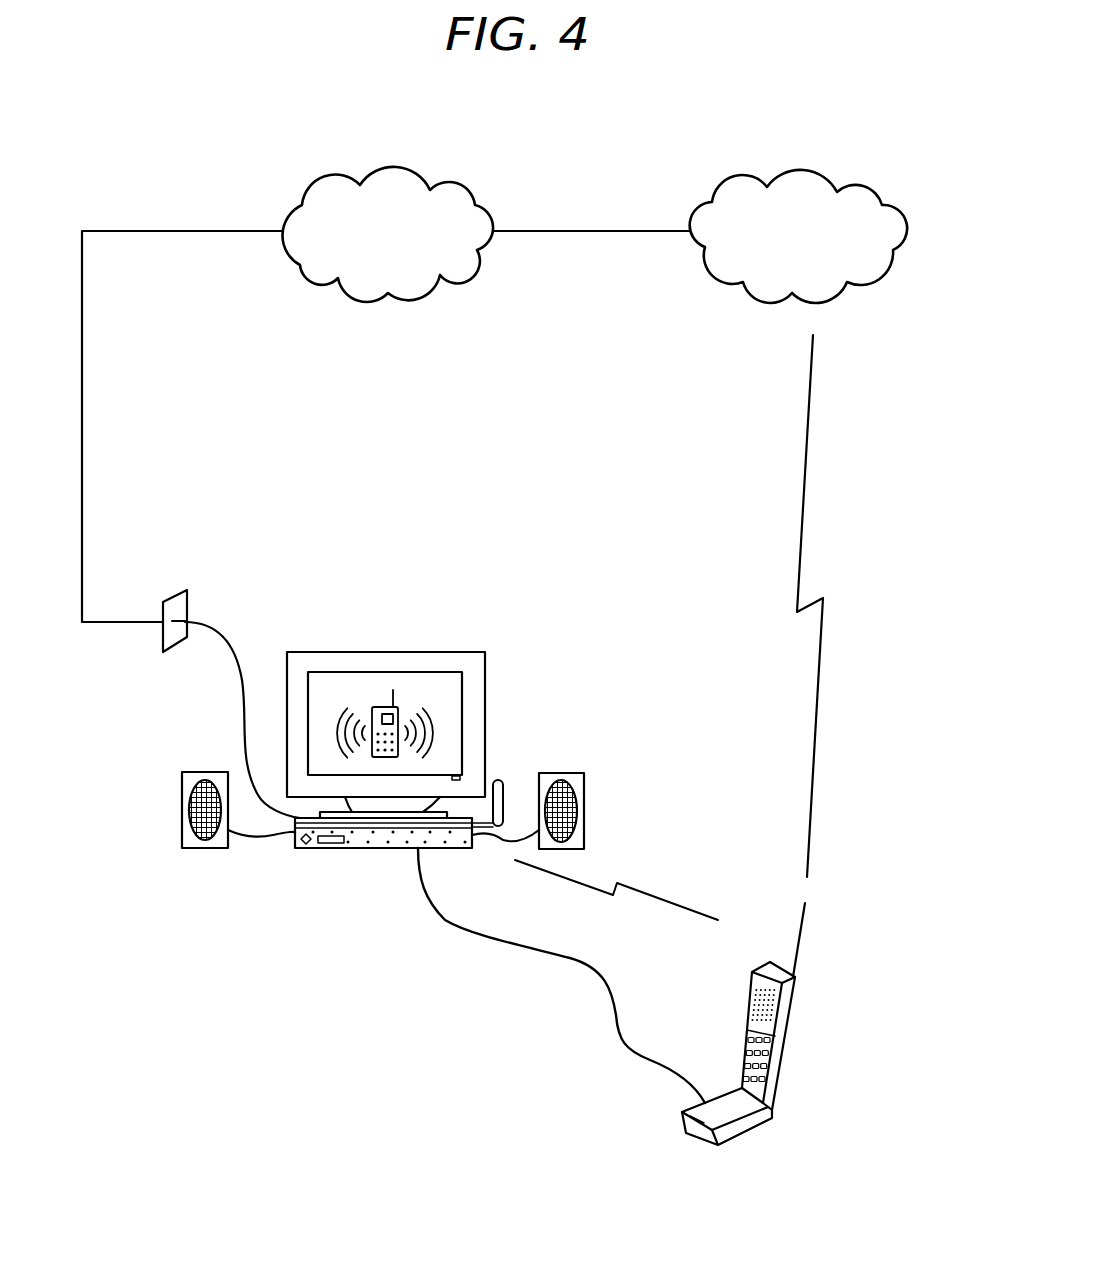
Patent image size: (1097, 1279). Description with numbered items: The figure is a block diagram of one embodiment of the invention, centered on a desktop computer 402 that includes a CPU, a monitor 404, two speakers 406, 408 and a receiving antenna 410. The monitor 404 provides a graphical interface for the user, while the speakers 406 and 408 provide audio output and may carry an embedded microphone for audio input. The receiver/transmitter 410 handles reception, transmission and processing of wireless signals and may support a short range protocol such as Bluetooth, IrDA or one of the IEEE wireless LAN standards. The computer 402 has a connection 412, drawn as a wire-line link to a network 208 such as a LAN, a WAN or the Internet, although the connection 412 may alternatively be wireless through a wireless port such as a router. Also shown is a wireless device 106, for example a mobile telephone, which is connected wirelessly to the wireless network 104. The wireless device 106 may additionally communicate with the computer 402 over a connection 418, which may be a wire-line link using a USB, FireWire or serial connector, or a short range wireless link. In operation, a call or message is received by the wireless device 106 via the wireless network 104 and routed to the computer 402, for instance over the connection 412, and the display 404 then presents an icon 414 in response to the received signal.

The wireless network 104 is at (880, 190).
The network 208 is at (303, 285).
The connection 412 is at (220, 638).
The monitor 404 is at (485, 690).
The icon 414 is at (377, 692).
The desktop computer 402 is at (358, 850).
The receiving antenna 410 is at (507, 782).
The speaker 408 is at (178, 810).
The speaker 406 is at (585, 808).
The connection 418 is at (657, 900).
The wireless device 106 is at (747, 1128).